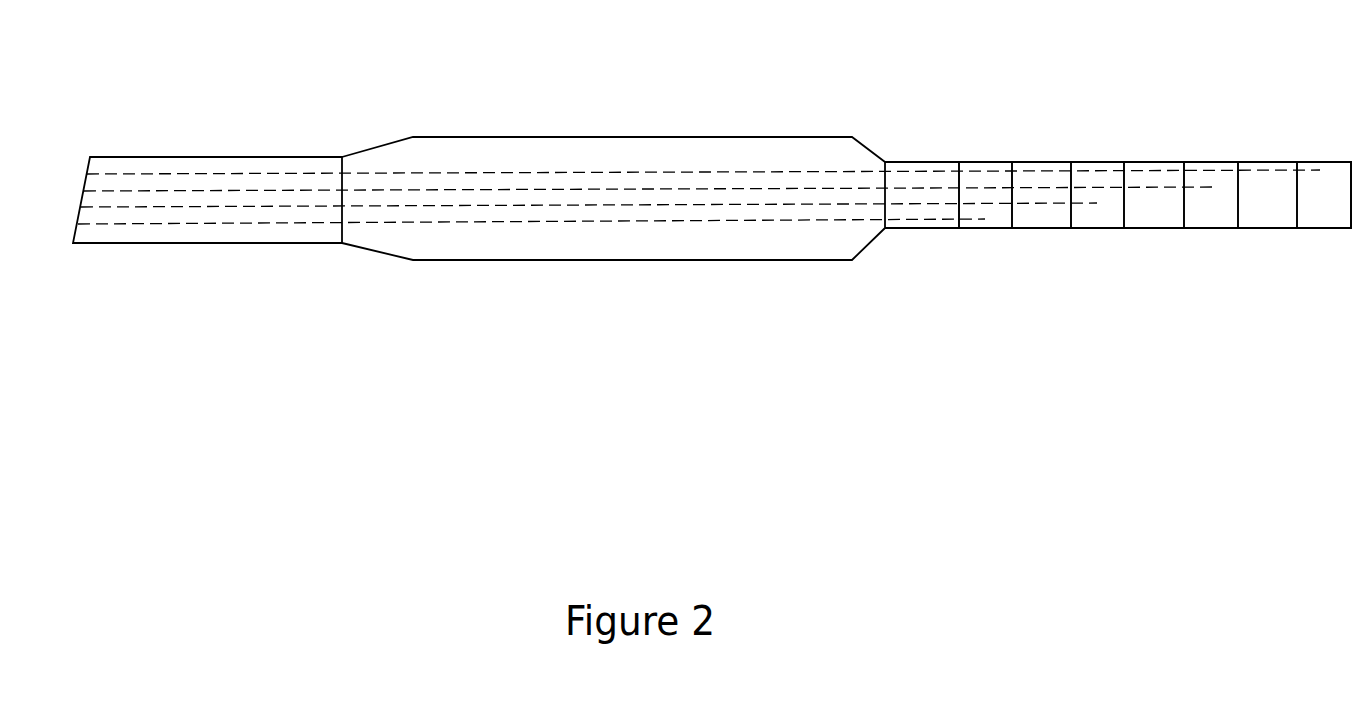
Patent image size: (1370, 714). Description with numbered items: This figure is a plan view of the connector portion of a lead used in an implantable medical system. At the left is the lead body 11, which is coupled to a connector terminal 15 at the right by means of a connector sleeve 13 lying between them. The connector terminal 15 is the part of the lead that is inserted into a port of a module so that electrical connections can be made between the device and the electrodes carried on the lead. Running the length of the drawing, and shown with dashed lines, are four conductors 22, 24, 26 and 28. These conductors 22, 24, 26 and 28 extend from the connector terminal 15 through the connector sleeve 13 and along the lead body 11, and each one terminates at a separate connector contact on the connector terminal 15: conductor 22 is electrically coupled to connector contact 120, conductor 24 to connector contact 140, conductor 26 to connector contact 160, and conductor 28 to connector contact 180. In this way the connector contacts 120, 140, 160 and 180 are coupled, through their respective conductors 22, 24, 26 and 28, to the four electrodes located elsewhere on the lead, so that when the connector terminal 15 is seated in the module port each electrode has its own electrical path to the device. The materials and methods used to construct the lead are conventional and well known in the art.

The lead body 11 is at (162, 158).
The connector sleeve 13 is at (493, 150).
The connector terminal 15 is at (1357, 122).
The conductor 22 is at (307, 223).
The conductor 24 is at (272, 210).
The conductor 26 is at (387, 188).
The conductor 28 is at (318, 175).
The connector contact 120 is at (985, 222).
The connector contact 140 is at (1095, 217).
The connector contact 160 is at (1212, 217).
The connector contact 180 is at (1325, 217).